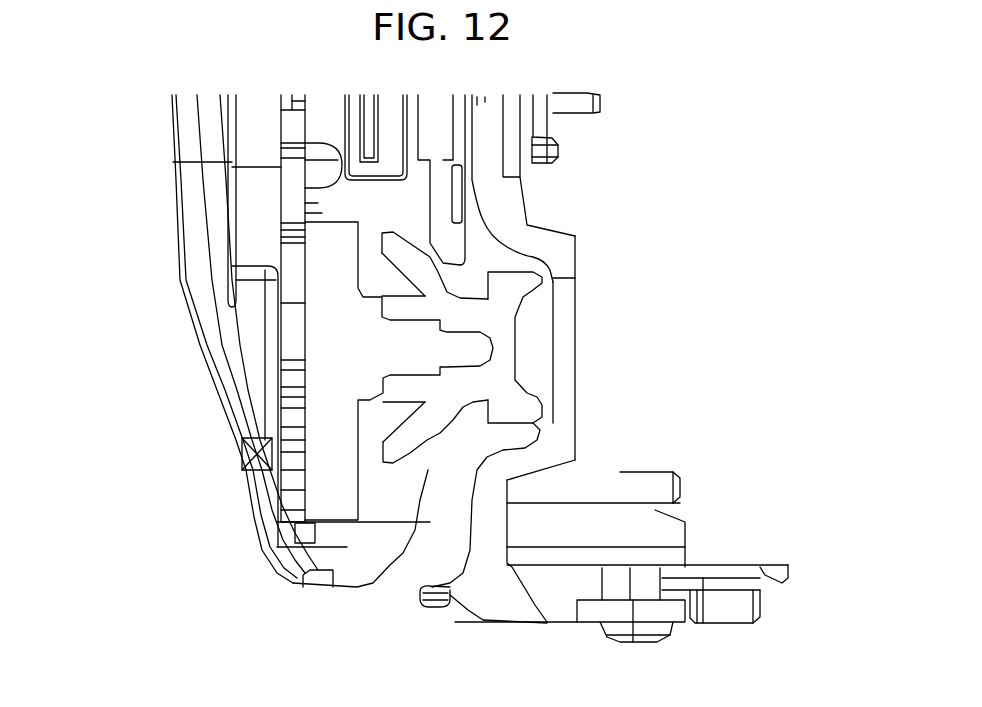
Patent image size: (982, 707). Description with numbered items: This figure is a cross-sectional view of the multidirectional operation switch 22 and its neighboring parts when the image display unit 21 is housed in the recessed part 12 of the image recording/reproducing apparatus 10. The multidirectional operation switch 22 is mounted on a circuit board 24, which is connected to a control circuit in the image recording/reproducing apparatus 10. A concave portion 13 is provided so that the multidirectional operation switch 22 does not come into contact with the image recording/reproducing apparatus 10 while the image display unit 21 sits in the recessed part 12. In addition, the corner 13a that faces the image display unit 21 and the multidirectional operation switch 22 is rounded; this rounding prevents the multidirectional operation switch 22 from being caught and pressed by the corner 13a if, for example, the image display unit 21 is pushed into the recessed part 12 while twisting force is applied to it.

The image recording/reproducing apparatus 10 is at (527, 603).
The recessed part 12 is at (480, 443).
The concave portion 13 is at (537, 355).
The corner 13a is at (507, 247).
The image display unit 21 is at (215, 343).
The multidirectional operation switch 22 is at (482, 312).
The circuit board 24 is at (290, 378).